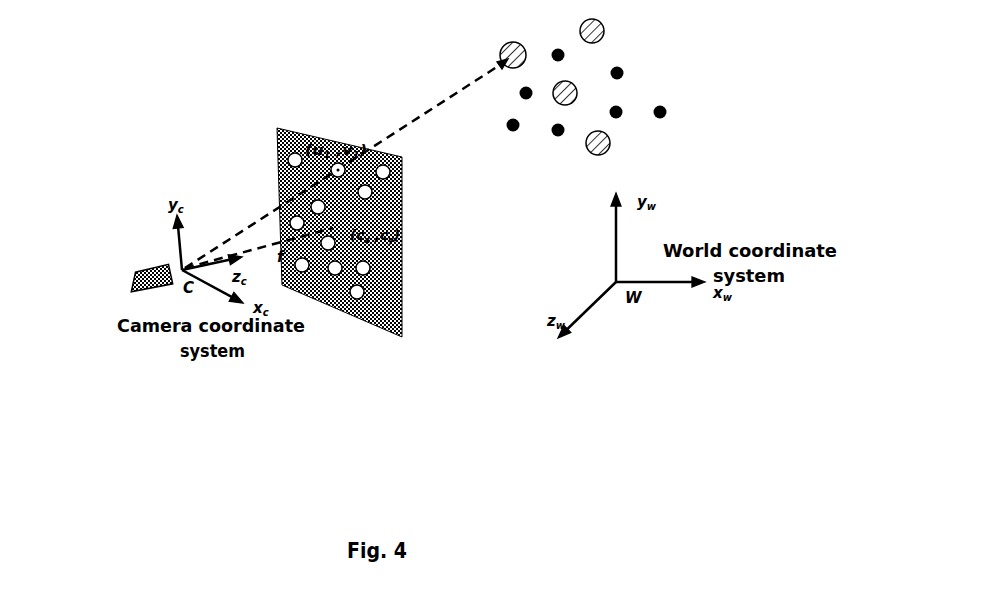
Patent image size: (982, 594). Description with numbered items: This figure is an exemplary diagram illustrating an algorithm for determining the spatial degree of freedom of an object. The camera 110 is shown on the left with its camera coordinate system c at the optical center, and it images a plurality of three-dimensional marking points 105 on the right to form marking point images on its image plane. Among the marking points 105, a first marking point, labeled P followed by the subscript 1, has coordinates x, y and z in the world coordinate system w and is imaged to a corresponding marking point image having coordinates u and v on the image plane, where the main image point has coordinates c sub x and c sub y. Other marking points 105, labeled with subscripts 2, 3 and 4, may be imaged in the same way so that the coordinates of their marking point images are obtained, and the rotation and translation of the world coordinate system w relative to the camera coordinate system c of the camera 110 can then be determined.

The three-dimensional marking points 105 is at (575, 88).
The camera 110 is at (117, 284).
The calibration point P1 1 is at (483, 46).
The calibration point P2 2 is at (605, 31).
The calibration point P3 3 is at (579, 93).
The calibration point P4 4 is at (612, 144).